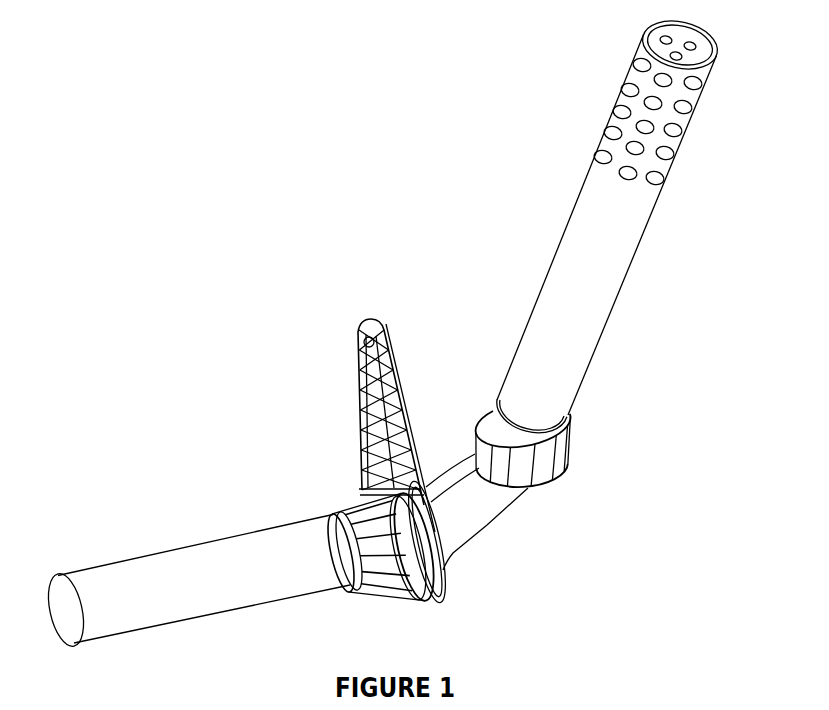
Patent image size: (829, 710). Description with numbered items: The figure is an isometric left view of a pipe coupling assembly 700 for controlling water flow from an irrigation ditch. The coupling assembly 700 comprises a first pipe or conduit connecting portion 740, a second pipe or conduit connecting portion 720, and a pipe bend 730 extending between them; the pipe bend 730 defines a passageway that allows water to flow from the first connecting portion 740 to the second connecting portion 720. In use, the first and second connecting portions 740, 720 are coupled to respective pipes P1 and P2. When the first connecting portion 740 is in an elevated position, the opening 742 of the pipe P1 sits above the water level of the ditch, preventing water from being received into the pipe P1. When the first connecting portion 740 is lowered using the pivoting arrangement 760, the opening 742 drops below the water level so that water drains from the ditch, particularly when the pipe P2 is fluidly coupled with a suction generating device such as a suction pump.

The pipe coupling assembly 700 is at (333, 457).
The second pipe or conduit connecting portion 720 is at (333, 542).
The pipe bend 730 is at (494, 524).
The first pipe or conduit connecting portion 740 is at (562, 456).
The opening 742 is at (716, 65).
The pivoting arrangement 760 is at (388, 343).
The pipe P1 is at (585, 234).
The pipe P2 is at (119, 569).